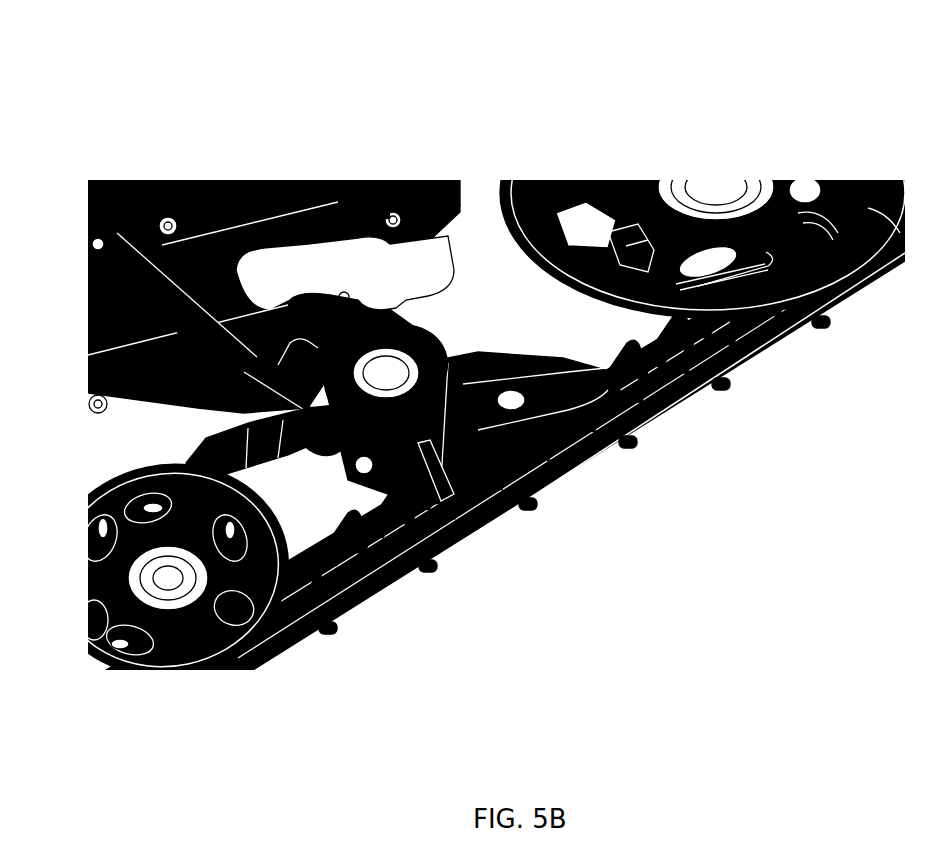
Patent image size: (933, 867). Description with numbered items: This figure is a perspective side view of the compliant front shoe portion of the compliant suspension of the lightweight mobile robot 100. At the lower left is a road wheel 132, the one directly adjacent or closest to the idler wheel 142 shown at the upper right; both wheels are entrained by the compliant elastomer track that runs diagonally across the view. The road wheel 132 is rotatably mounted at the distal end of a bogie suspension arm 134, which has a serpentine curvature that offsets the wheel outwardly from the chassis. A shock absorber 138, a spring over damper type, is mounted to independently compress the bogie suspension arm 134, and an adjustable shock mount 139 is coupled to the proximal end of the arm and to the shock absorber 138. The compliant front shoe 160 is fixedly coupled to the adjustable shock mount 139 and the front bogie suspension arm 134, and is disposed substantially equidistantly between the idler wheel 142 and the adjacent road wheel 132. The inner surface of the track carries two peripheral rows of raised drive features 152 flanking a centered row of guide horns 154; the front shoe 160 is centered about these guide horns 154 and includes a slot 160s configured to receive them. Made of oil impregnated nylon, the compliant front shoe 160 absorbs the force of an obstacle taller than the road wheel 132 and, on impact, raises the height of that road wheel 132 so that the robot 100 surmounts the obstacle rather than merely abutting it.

The lightweight mobile robot 100 is at (360, 71).
The road wheel 132 is at (180, 637).
The bogie suspension arm 134 is at (195, 446).
The shock absorber 138 is at (213, 240).
The adjustable shock mount 139 is at (333, 467).
The idler wheel 142 is at (778, 170).
The raised drive features 152 is at (700, 367).
The guide horns 154 is at (665, 330).
The compliant front shoe 160 is at (477, 368).
The slot 160s is at (438, 477).